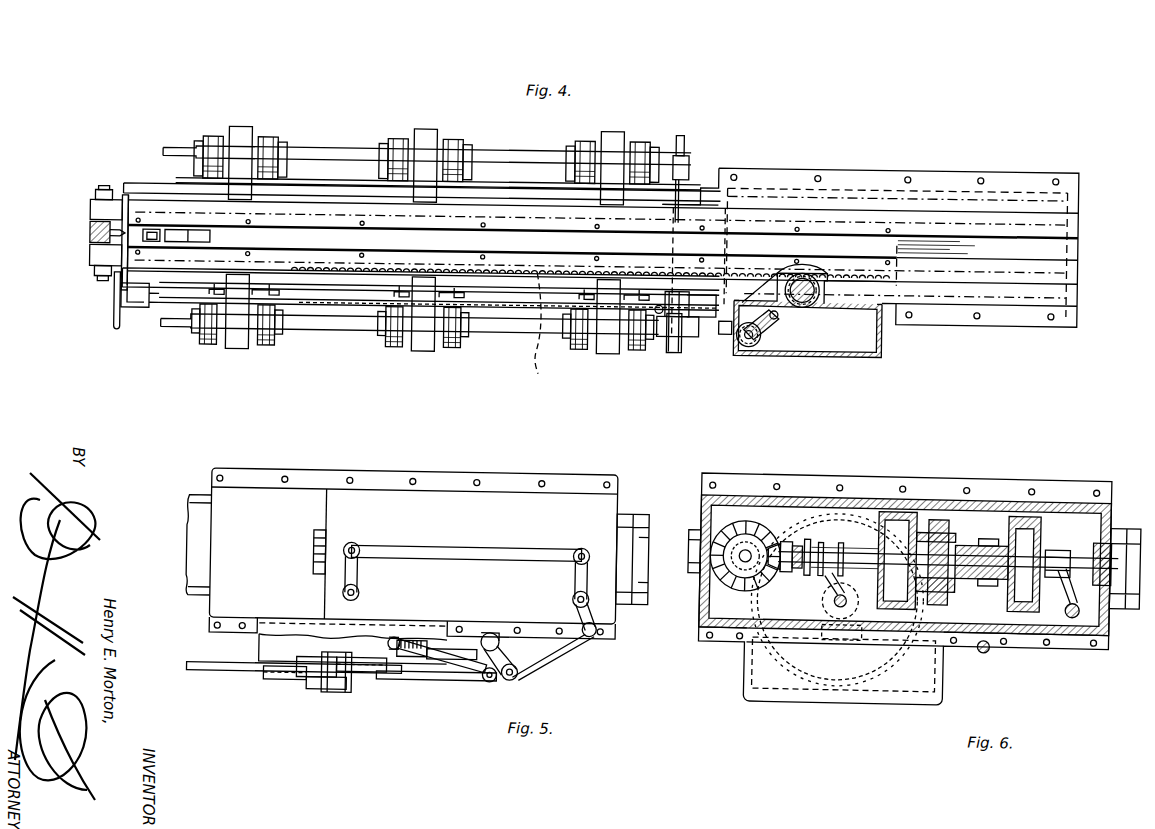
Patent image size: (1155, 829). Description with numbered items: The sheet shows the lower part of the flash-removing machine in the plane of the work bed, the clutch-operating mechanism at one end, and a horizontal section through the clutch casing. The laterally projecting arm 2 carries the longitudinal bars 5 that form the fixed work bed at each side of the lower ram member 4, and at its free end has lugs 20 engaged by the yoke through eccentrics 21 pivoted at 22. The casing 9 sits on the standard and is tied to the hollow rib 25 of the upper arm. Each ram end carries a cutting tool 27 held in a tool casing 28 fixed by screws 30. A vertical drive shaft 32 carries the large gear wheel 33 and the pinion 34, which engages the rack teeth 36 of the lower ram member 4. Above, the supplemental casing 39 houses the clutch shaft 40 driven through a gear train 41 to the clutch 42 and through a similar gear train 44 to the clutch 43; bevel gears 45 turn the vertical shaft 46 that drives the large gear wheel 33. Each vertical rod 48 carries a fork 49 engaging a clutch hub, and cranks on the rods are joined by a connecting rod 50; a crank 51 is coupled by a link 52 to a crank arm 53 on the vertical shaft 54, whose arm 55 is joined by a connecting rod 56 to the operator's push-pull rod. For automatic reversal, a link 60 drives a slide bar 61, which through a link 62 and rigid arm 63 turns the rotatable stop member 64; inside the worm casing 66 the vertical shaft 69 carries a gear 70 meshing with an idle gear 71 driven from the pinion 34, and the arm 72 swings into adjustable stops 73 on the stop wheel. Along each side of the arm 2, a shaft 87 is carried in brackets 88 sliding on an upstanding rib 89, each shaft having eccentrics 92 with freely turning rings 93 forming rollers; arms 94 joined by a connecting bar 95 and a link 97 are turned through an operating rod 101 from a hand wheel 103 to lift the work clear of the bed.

In FIG. 4, the arm 2 is at (334, 305).
In FIG. 4, the lower ram member 4 is at (340, 238).
In FIG. 4, the bars 5 is at (316, 212).
In FIG. 4, the casing 9 is at (928, 165).
In FIG. 4, the lugs 20 is at (88, 210).
In FIG. 4, the eccentrics 21 is at (94, 192).
In FIG. 4, the pivot 22 is at (105, 282).
In FIG. 5, the hollow rib 25 is at (190, 550).
In FIG. 4, the cutting tool 27 is at (158, 228).
In FIG. 4, the tool casing 28 is at (148, 228).
In FIG. 4, the screws 30 is at (88, 233).
In FIG. 4, the vertical drive shaft 32 is at (805, 290).
In FIG. 6, the vertical drive shaft 32 is at (826, 598).
In FIG. 6, the large gear wheel 33 is at (852, 512).
In FIG. 4, the pinion 34 is at (816, 300).
In FIG. 4, the rack teeth 36 is at (541, 326).
In FIG. 5, the supplemental casing 39 is at (548, 495).
In FIG. 6, the supplemental casing 39 is at (1070, 480).
In FIG. 6, the clutch shaft 40 is at (1085, 536).
In FIG. 6, the gear train 41 is at (940, 515).
In FIG. 6, the clutch 42 is at (900, 508).
In FIG. 6, the clutch 43 is at (1028, 510).
In FIG. 6, the gear train 44 is at (990, 533).
In FIG. 6, the bevel gears 45 is at (770, 545).
In FIG. 6, the vertical shaft 46 is at (740, 532).
In FIG. 5, the vertical rod 48 is at (361, 590).
In FIG. 6, the vertical rod 48 is at (851, 602).
In FIG. 6, the fork 49 is at (845, 580).
In FIG. 5, the connecting rod 50 is at (458, 548).
In FIG. 5, the crank 51 is at (580, 606).
In FIG. 5, the link 52 is at (553, 648).
In FIG. 5, the crank arm 53 is at (524, 672).
In FIG. 5, the vertical shaft 54 is at (496, 628).
In FIG. 6, the vertical shaft 54 is at (991, 648).
In FIG. 5, the arm 55 is at (490, 678).
In FIG. 5, the connecting rod 56 is at (205, 670).
In FIG. 5, the link 60 is at (463, 662).
In FIG. 5, the slide bar 61 is at (436, 660).
In FIG. 5, the link 62 is at (372, 672).
In FIG. 5, the rigid arm 63 is at (305, 678).
In FIG. 5, the rotatable stop member 64 is at (268, 677).
In FIG. 4, the worm casing 66 is at (862, 347).
In FIG. 5, the worm casing 66 is at (266, 647).
In FIG. 4, the vertical shaft 69 is at (750, 338).
In FIG. 4, the gear 70 is at (728, 328).
In FIG. 4, the idle gear 71 is at (790, 320).
In FIG. 5, the arm 72 is at (322, 688).
In FIG. 5, the adjustable stops 73 is at (348, 690).
In FIG. 4, the shaft 87 is at (336, 147).
In FIG. 4, the brackets 88 is at (242, 132).
In FIG. 4, the upstanding rib 89 is at (512, 194).
In FIG. 4, the eccentric 92 is at (570, 145).
In FIG. 4, the ring 93 is at (580, 140).
In FIG. 4, the arm 94 is at (684, 133).
In FIG. 4, the connecting bar 95 is at (680, 178).
In FIG. 4, the link 97 is at (676, 348).
In FIG. 4, the operating rod 101 is at (308, 305).
In FIG. 4, the hand wheel 103 is at (113, 327).